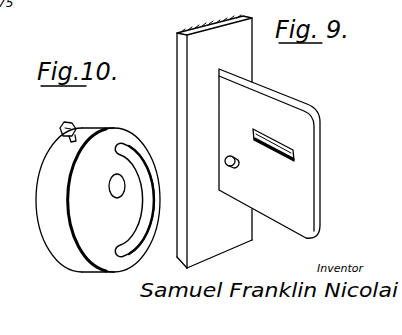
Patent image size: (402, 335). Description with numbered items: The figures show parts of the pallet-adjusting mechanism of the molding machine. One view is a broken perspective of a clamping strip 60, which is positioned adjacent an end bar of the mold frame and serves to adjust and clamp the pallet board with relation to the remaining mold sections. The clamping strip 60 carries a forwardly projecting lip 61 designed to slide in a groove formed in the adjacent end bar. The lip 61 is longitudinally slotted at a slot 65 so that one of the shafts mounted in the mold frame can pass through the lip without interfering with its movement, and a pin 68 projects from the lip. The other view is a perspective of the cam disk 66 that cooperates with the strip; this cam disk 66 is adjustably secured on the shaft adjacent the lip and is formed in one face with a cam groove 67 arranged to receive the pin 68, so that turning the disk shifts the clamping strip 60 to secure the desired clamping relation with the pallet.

In FIG. 9, the clamping strip 60 is at (214, 141).
In FIG. 9, the lip 61 is at (266, 102).
In FIG. 9, the slot 65 is at (295, 154).
In FIG. 9, the pin 68 is at (234, 168).
In FIG. 10, the cam disk 66 is at (92, 242).
In FIG. 10, the cam groove 67 is at (135, 243).